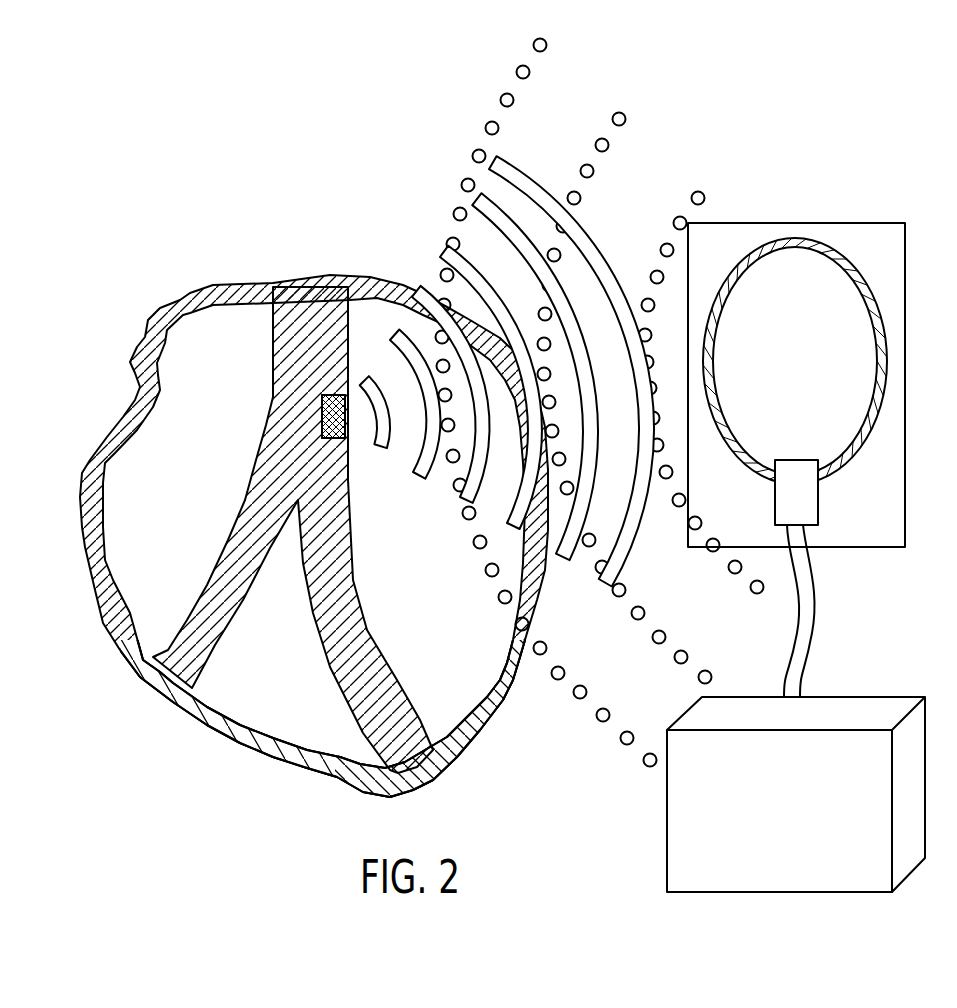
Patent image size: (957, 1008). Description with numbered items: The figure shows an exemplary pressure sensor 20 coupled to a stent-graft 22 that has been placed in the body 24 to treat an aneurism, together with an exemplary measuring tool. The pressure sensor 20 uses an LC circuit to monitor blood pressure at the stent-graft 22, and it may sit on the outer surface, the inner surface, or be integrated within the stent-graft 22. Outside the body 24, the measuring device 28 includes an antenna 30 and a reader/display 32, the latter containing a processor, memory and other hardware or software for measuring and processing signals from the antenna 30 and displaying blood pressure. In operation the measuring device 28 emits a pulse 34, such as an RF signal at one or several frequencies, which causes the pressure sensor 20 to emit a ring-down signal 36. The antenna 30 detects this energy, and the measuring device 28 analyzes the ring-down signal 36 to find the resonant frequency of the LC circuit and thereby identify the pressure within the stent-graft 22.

The pressure sensor 20 is at (320, 423).
The stent-graft 22 is at (300, 302).
The body 24 is at (172, 315).
The measuring device 28 is at (890, 457).
The antenna 30 is at (800, 240).
The reader/display 32 is at (878, 707).
The pulse 34 is at (468, 178).
The ring-down signal 36 is at (537, 177).